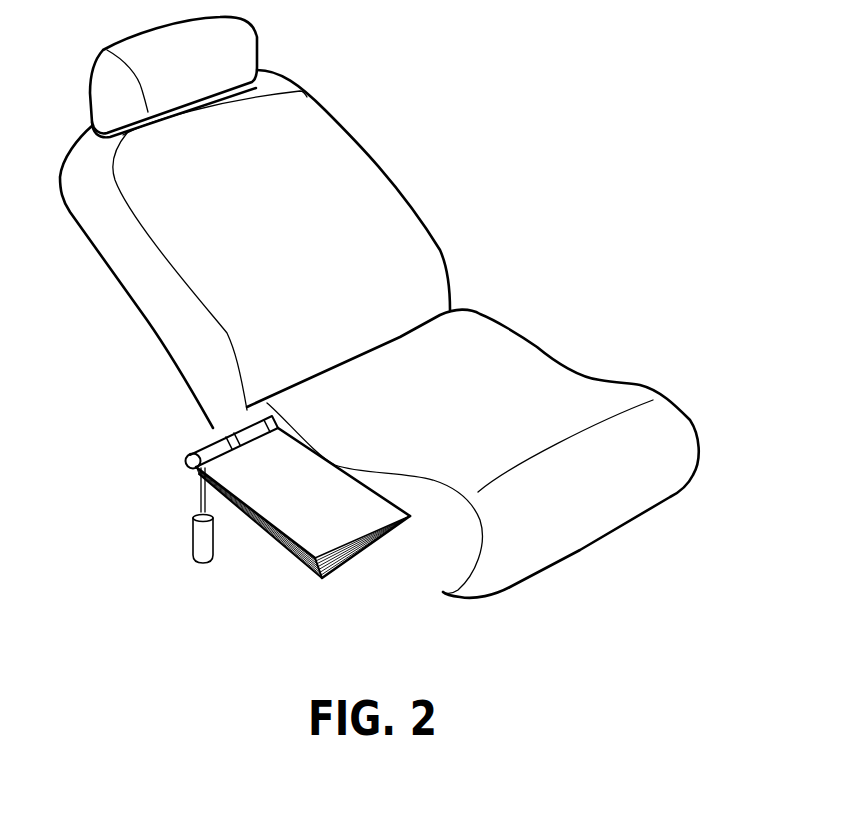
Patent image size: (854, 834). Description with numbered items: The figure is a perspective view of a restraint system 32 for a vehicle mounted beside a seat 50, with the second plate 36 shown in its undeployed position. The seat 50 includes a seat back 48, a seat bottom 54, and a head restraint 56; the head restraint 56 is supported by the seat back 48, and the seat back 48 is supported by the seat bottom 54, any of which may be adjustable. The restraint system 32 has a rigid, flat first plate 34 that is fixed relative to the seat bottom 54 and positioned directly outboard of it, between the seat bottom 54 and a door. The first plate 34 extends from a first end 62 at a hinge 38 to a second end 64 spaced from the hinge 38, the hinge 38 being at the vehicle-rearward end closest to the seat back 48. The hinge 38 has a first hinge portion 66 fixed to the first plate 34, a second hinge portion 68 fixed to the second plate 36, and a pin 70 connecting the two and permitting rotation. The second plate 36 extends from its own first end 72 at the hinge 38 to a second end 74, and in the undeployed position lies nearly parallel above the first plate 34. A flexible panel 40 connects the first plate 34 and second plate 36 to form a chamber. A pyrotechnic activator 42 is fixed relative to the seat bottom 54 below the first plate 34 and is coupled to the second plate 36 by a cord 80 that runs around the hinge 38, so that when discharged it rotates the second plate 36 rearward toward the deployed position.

The restraint system 32 is at (522, 143).
The first plate 34 is at (273, 542).
The second plate 36 is at (326, 539).
The hinge 38 is at (268, 417).
The panel 40 is at (311, 566).
The pyrotechnic activator 42 is at (193, 545).
The seat back 48 is at (354, 201).
The seat 50 is at (507, 324).
The seat bottom 54 is at (672, 445).
The head restraint 56 is at (227, 43).
The first end 62 is at (187, 463).
The second end 64 is at (345, 572).
The first hinge portion 66 is at (252, 422).
The second hinge portion 68 is at (203, 452).
The pin 70 is at (184, 460).
The first end 72 is at (243, 430).
The second end 74 is at (372, 541).
The cord 80 is at (197, 493).